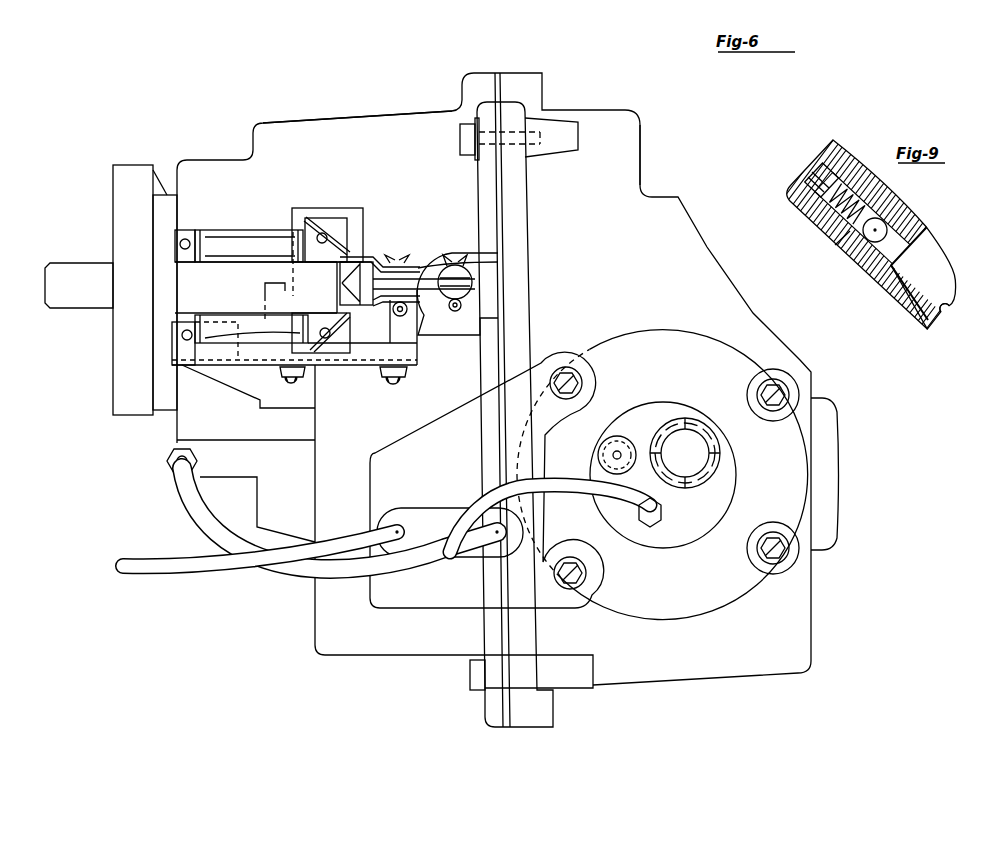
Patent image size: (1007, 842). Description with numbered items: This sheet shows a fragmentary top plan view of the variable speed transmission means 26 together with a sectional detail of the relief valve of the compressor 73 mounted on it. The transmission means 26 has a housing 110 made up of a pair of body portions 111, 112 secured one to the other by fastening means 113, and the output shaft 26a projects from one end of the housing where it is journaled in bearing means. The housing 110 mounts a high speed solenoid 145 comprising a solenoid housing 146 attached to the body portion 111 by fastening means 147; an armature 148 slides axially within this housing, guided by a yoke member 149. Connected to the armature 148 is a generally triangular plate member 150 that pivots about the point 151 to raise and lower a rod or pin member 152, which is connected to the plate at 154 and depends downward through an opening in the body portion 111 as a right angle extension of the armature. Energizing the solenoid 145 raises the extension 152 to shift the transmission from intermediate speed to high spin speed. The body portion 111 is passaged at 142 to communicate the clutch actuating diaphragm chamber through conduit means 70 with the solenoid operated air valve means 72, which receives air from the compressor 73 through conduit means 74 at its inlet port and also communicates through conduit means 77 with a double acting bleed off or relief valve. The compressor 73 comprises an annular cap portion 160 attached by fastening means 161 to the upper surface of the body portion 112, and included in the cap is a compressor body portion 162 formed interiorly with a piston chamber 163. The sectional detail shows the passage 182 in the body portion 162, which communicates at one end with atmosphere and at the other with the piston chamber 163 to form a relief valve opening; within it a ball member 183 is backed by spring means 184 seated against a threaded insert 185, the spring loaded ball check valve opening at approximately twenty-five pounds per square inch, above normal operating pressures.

In FIG. 6, the transmission means 26 is at (370, 108).
In FIG. 6, the output shaft 26a is at (70, 310).
In FIG. 6, the conduit means 70 is at (346, 578).
In FIG. 6, the solenoid operated air valve means 72 is at (422, 506).
In FIG. 6, the compressor 73 is at (655, 330).
In FIG. 6, the conduit means 74 is at (556, 485).
In FIG. 6, the conduit means 77 is at (190, 572).
In FIG. 6, the housing 110 is at (424, 112).
In FIG. 6, the body portion 111 is at (268, 130).
In FIG. 6, the body portion 112 is at (630, 148).
In FIG. 6, the fastening means 113 is at (455, 140).
In FIG. 6, the passage 142 is at (167, 470).
In FIG. 6, the high speed solenoid 145 is at (262, 227).
In FIG. 6, the solenoid housing 146 is at (210, 228).
In FIG. 6, the fastening means 147 is at (327, 232).
In FIG. 6, the armature 148 is at (365, 306).
In FIG. 6, the yoke member 149 is at (371, 257).
In FIG. 6, the plate member 150 is at (428, 268).
In FIG. 6, the pivot point 151 is at (412, 312).
In FIG. 6, the rod or pin member 152 is at (465, 280).
In FIG. 6, the connection 154 is at (462, 305).
In FIG. 6, the cap portion 160 is at (795, 468).
In FIG. 6, the fastening means 161 is at (566, 368).
In FIG. 9, the compressor body portion 162 is at (866, 272).
In FIG. 9, the piston chamber 163 is at (945, 309).
In FIG. 9, the passage 182 is at (840, 248).
In FIG. 9, the ball member 183 is at (888, 228).
In FIG. 9, the spring means 184 is at (900, 190).
In FIG. 9, the threaded insert 185 is at (795, 210).